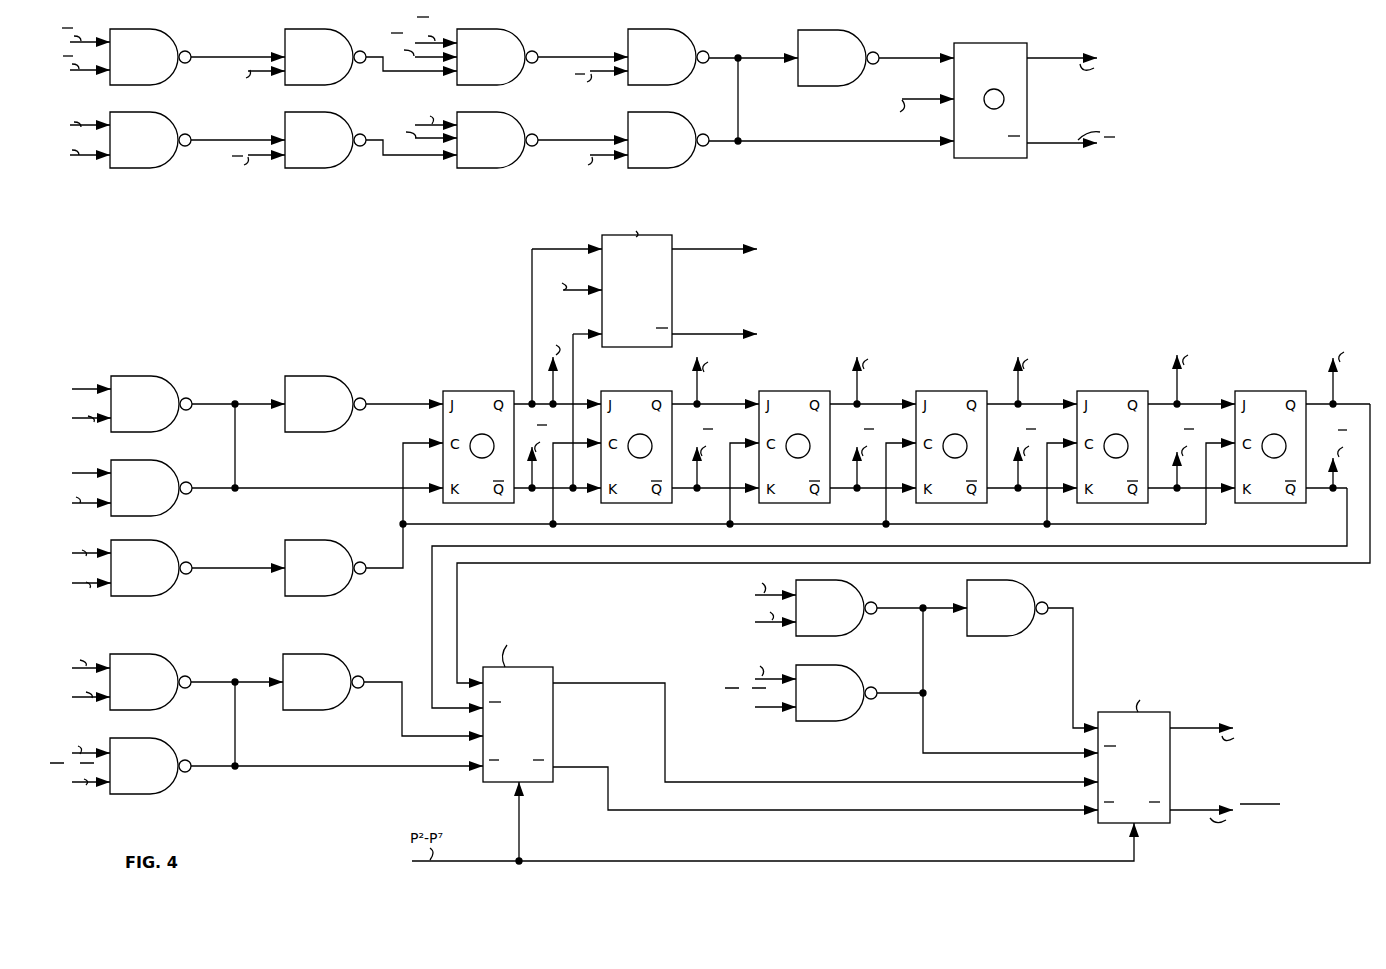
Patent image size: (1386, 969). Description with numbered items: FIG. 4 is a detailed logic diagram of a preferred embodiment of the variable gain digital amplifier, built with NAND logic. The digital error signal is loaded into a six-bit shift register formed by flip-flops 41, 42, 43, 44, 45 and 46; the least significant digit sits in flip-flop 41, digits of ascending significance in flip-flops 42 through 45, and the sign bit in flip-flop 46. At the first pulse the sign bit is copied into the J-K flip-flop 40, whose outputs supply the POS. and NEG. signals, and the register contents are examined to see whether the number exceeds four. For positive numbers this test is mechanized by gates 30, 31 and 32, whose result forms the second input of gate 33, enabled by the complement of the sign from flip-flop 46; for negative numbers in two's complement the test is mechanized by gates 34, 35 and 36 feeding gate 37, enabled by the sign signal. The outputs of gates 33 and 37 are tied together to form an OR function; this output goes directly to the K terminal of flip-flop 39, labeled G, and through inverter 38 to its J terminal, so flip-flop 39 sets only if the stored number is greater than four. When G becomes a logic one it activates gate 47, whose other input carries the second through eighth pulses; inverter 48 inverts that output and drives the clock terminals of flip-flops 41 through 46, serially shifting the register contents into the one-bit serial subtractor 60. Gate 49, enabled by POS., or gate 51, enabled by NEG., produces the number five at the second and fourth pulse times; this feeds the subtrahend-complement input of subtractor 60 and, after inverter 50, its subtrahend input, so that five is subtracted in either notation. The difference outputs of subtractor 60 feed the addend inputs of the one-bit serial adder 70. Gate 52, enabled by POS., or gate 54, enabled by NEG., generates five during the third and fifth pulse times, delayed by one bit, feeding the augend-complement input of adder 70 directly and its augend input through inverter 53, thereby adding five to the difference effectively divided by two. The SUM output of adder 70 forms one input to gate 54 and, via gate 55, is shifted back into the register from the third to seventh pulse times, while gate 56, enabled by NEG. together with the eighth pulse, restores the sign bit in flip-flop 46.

The NAND gate 30 is at (156, 32).
The NAND gate 31 is at (332, 32).
The NAND gate 32 is at (504, 30).
The NAND gate 33 is at (674, 30).
The NAND gate 34 is at (156, 116).
The NAND gate 35 is at (329, 116).
The NAND gate 36 is at (516, 115).
The NAND gate 37 is at (686, 115).
The inverter 38 is at (846, 30).
The flip-flop G 39 is at (1006, 42).
The J-K flip-flop 40 is at (598, 238).
The flip-flop 41 is at (1276, 391).
The flip-flop 42 is at (1118, 391).
The flip-flop 43 is at (958, 391).
The flip-flop 44 is at (801, 391).
The flip-flop 45 is at (641, 391).
The flip-flop 46 is at (488, 391).
The NAND gate 47 is at (180, 535).
The inverter 48 is at (320, 539).
The NAND gate 49 is at (152, 653).
The inverter 50 is at (330, 653).
The NAND gate 51 is at (168, 738).
The NAND gate 52 is at (856, 590).
The inverter 53 is at (1034, 590).
The NAND gate 54 is at (156, 373).
The NAND gate 55 is at (332, 374).
The NAND gate 56 is at (164, 459).
The one-bit serial subtractor 60 is at (556, 669).
The one-bit serial adder 70 is at (1183, 722).